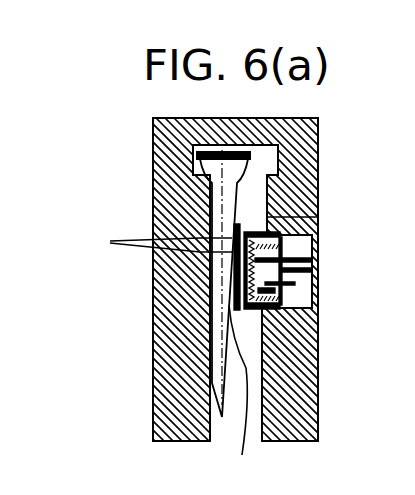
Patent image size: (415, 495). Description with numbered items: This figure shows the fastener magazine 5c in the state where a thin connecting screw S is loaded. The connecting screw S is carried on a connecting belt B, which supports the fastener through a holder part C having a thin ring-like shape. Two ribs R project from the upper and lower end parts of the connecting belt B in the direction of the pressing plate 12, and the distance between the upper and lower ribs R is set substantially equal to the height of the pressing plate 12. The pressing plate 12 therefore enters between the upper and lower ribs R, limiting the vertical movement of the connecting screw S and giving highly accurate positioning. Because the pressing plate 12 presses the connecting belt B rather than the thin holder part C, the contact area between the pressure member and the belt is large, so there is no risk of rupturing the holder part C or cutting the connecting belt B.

The fastener magazine 5c is at (152, 167).
The holder part C is at (161, 245).
The connecting screw S is at (247, 199).
The rib R is at (270, 219).
The pressing plate 12 is at (286, 250).
The connecting belt B is at (224, 317).